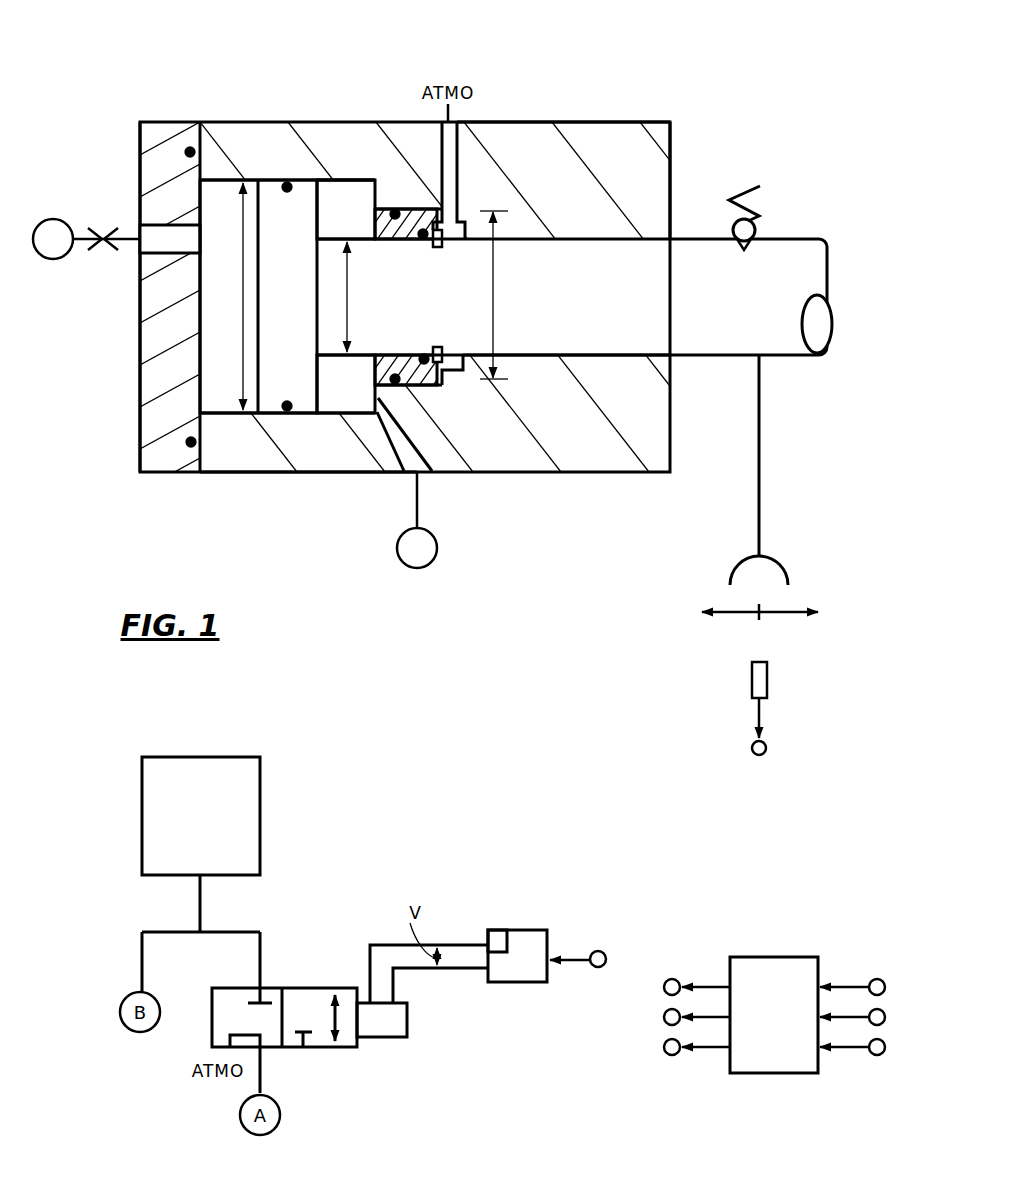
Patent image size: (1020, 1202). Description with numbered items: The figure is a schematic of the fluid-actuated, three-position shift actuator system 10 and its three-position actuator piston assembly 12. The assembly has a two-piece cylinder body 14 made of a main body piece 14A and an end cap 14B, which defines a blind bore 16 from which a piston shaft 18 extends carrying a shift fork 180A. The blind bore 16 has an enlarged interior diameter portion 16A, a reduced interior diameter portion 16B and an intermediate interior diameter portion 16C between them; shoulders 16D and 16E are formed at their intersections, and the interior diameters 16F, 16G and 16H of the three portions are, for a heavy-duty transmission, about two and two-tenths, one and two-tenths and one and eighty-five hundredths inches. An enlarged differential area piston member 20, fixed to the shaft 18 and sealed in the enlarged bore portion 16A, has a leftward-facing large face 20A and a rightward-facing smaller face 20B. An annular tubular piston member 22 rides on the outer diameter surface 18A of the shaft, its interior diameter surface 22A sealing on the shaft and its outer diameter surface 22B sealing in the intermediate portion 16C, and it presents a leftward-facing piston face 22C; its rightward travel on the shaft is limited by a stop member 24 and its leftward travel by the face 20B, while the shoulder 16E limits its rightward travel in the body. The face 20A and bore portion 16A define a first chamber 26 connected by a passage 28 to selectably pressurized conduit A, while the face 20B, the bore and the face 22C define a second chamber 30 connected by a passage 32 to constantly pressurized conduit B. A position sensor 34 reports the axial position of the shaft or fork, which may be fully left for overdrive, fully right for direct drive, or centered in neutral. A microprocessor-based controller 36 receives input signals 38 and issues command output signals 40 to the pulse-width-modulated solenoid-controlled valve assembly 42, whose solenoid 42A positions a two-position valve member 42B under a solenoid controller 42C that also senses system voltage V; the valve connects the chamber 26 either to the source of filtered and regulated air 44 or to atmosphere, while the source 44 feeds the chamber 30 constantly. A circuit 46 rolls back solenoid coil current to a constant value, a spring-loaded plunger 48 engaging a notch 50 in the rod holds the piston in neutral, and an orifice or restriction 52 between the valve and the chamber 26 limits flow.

The fluid-actuated, three-position shift actuator system 10 is at (746, 77).
The three-position actuator piston assembly 12 is at (346, 92).
The cylinder body 14 is at (585, 121).
The main body piece 14A is at (612, 150).
The end cap 14B is at (185, 121).
The blind bore 16 is at (655, 167).
The enlarged interior diameter portion 16A is at (348, 442).
The reduced interior diameter portion 16B is at (666, 336).
The intermediate interior diameter portion 16C is at (413, 387).
The shoulder 16D is at (373, 197).
The shoulder 16E is at (443, 385).
The interior diameter of enlarged bore portion 16F is at (243, 317).
The interior diameter of reduced bore portion 16G is at (493, 267).
The interior diameter of intermediate bore portion 16H is at (343, 320).
The piston shaft 18 is at (568, 357).
The outer diameter surface of shaft 18A is at (787, 237).
The differential area piston member 20 is at (303, 402).
The large face 20A is at (220, 296).
The smaller face 20B is at (323, 297).
The annular tubular piston member 22 is at (387, 243).
The interior diameter surface 22A is at (423, 242).
The outer diameter surface 22B is at (410, 208).
The leftward-facing piston face 22C is at (376, 360).
The stop member 24 is at (444, 352).
The first chamber 26 is at (228, 355).
The passage 28 is at (170, 245).
The second chamber 30 is at (337, 208).
The passage 32 is at (405, 455).
The position sensor 34 is at (790, 712).
The microprocessor-based controller 36 is at (790, 1045).
The input signals 38 is at (847, 926).
The command output signals 40 is at (700, 926).
The solenoid-controlled valve assembly 42 is at (317, 960).
The solenoid 42A is at (378, 1038).
The two-position valve member 42B is at (318, 1050).
The solenoid controller 42C is at (510, 975).
The source of filtered and regulated air 44 is at (200, 817).
The circuit 46 is at (498, 940).
The spring-loaded plunger 48 is at (778, 196).
The notch 50 is at (737, 243).
The orifice or restriction 52 is at (103, 226).
The shift fork 180A is at (760, 468).